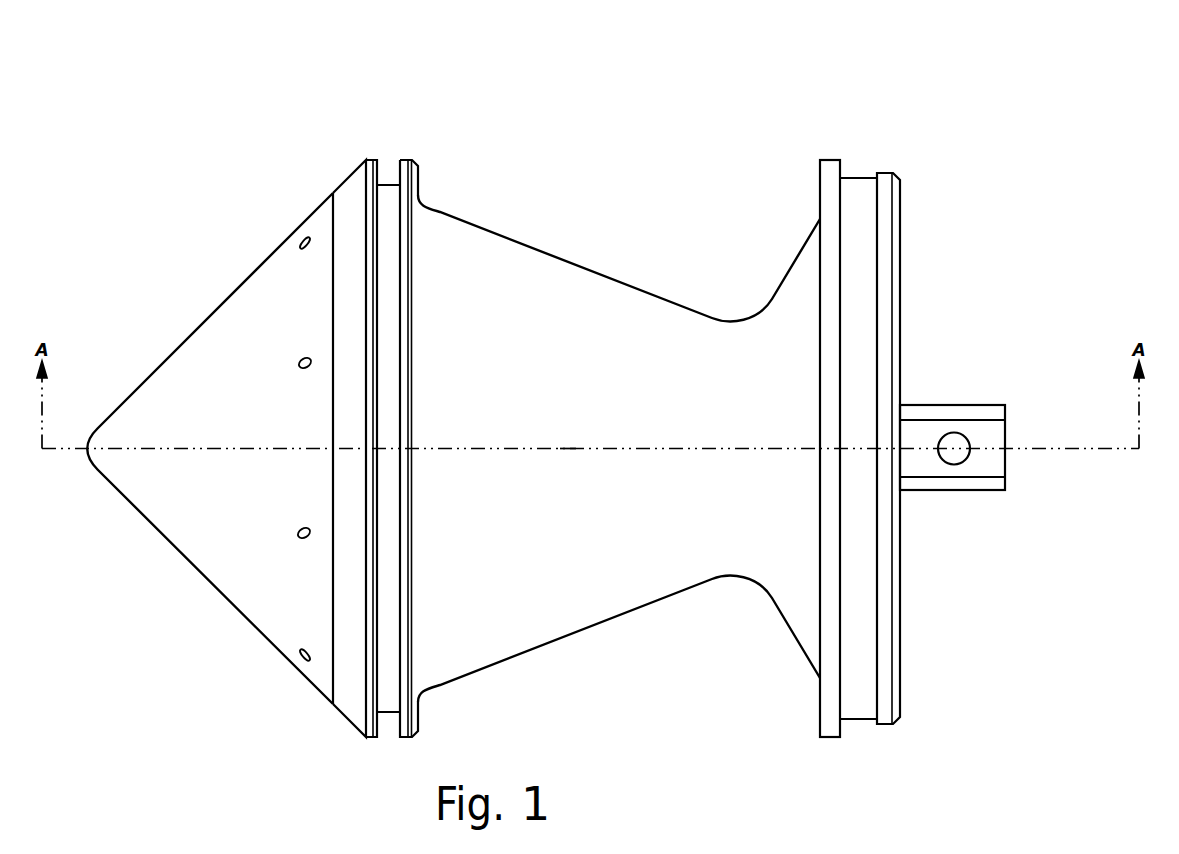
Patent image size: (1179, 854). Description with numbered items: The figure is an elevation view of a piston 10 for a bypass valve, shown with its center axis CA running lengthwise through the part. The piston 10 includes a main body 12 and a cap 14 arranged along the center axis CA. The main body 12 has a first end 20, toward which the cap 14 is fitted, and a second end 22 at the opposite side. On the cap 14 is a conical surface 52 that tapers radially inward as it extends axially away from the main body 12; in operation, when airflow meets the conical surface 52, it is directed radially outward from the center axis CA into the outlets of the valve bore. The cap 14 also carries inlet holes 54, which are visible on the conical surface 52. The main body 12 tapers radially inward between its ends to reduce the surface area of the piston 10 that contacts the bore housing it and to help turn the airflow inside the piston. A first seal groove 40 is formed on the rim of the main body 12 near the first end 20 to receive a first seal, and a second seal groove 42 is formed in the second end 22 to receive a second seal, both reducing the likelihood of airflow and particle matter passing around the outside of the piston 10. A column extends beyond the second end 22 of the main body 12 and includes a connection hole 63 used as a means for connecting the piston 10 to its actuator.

The piston 10 is at (108, 98).
The main body 12 is at (523, 200).
The cap 14 is at (164, 337).
The first end 20 is at (333, 193).
The second end 22 is at (900, 180).
The first seal groove 40 is at (388, 183).
The second seal groove 42 is at (856, 178).
The conical surface 52 is at (212, 382).
The inlet holes 54 is at (298, 361).
The connection hole 63 is at (953, 465).
The center axis CA is at (568, 448).